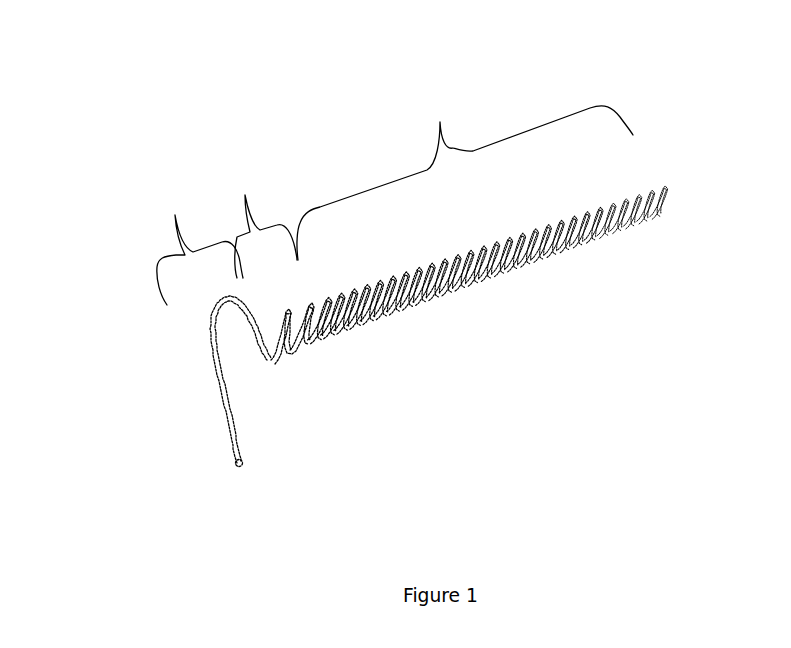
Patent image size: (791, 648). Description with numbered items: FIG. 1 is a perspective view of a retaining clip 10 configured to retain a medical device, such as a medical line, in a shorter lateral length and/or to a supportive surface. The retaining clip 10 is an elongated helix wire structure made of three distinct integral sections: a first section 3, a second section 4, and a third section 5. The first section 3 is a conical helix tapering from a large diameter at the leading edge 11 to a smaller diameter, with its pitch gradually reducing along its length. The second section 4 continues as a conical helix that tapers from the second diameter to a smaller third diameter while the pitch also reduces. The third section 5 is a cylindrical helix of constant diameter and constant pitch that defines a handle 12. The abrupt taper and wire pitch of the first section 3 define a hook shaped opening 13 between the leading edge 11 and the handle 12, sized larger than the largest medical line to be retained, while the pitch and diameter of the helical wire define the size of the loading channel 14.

The retaining clip 10 is at (387, 68).
The first section 3 is at (200, 246).
The second section 4 is at (263, 221).
The third section 5 is at (465, 177).
The leading edge 11 is at (217, 421).
The handle 12 is at (512, 273).
The hook shaped opening 13 is at (248, 385).
The loading channel 14 is at (287, 352).